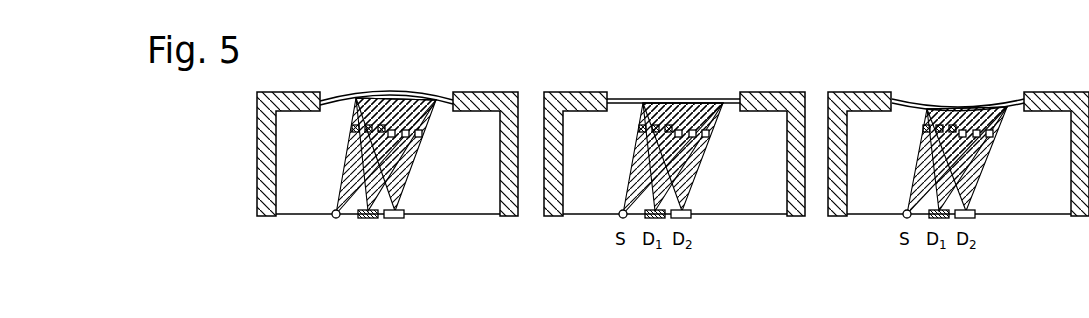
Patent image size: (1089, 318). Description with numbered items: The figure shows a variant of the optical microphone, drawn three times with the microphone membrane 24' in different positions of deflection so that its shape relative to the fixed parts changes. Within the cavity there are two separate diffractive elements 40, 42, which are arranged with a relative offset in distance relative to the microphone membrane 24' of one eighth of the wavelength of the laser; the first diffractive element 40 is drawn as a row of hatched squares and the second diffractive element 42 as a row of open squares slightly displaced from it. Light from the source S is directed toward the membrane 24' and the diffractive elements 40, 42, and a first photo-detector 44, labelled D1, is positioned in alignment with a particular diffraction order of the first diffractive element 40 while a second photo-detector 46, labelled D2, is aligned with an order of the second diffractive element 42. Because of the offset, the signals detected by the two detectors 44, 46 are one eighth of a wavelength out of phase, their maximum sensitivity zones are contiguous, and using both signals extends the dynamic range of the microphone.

The microphone membrane 24' is at (386, 72).
The first diffractive element 40 is at (352, 129).
The second diffractive element 42 is at (406, 129).
The photo-detector 44 is at (358, 218).
The second photo-detector 46 is at (402, 213).
The light source S is at (334, 229).
The first detector D1 is at (342, 243).
The second detector D2 is at (438, 229).